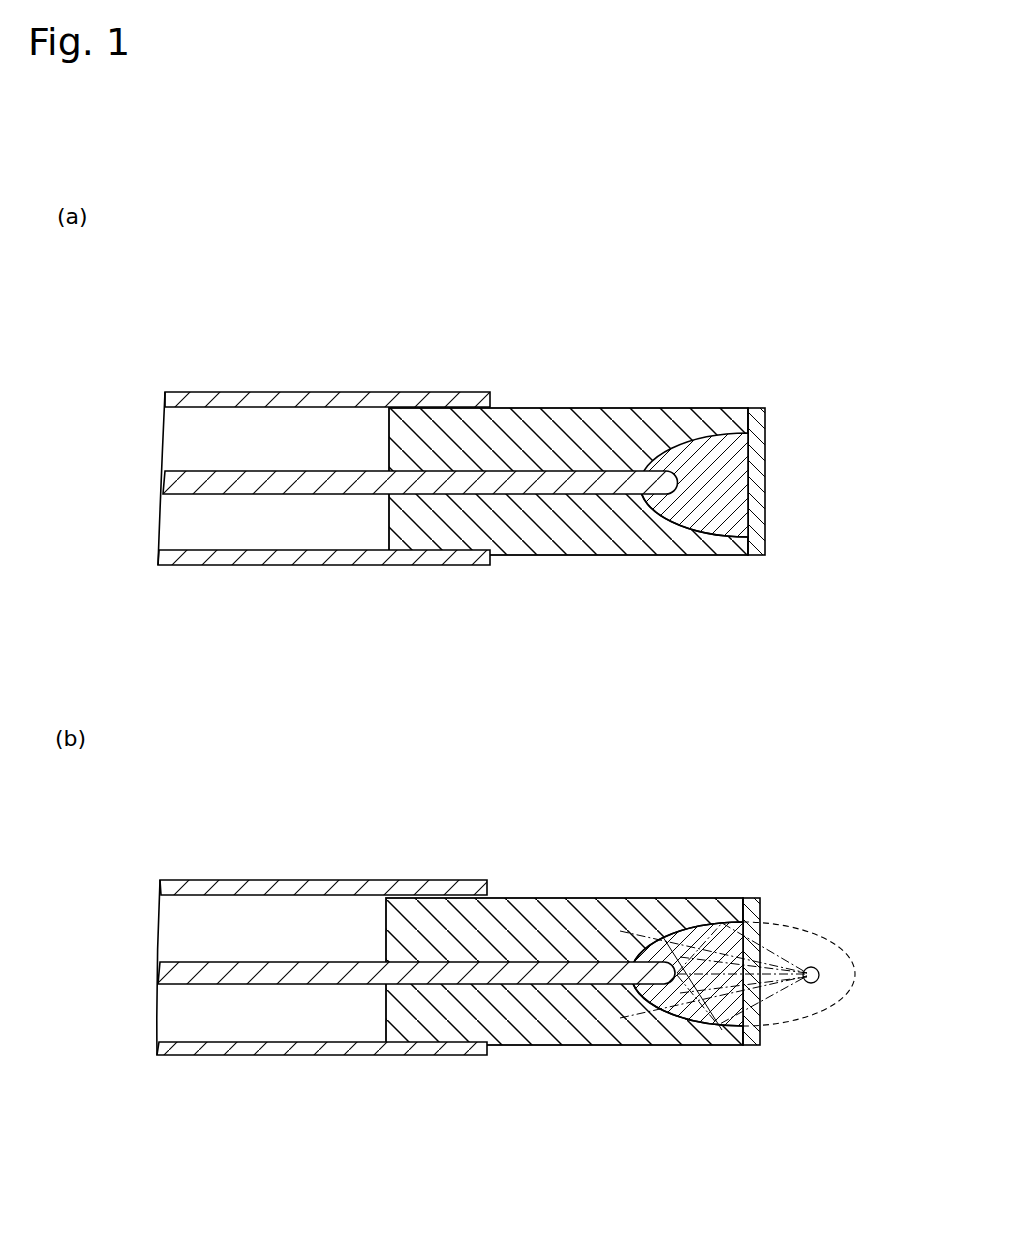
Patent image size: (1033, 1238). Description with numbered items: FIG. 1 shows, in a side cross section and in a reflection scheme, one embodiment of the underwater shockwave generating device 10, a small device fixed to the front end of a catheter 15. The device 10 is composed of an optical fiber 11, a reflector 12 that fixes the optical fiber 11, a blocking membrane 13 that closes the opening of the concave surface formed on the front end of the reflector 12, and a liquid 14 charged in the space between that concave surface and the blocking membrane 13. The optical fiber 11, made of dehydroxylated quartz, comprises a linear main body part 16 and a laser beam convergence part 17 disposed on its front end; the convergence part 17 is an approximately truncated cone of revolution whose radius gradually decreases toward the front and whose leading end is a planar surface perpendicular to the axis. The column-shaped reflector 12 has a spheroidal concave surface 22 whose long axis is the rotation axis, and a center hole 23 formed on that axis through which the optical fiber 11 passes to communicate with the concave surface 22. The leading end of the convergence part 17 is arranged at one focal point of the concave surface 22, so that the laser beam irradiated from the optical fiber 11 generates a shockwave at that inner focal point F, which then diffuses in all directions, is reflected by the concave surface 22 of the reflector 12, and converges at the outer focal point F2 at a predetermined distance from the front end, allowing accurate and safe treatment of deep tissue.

The underwater shockwave generating device 10 is at (533, 695).
The optical fiber 11 is at (418, 610).
The reflector 12 is at (538, 540).
The blocking membrane 13 is at (767, 482).
The liquid 14 is at (730, 537).
The catheter 15 is at (302, 392).
The linear main body part 16 is at (488, 462).
The laser beam convergence part 17 is at (645, 460).
The concave surface 22 is at (735, 923).
The center hole 23 is at (490, 965).
The focal point F is at (722, 1030).
The outer focal point F2 is at (820, 967).